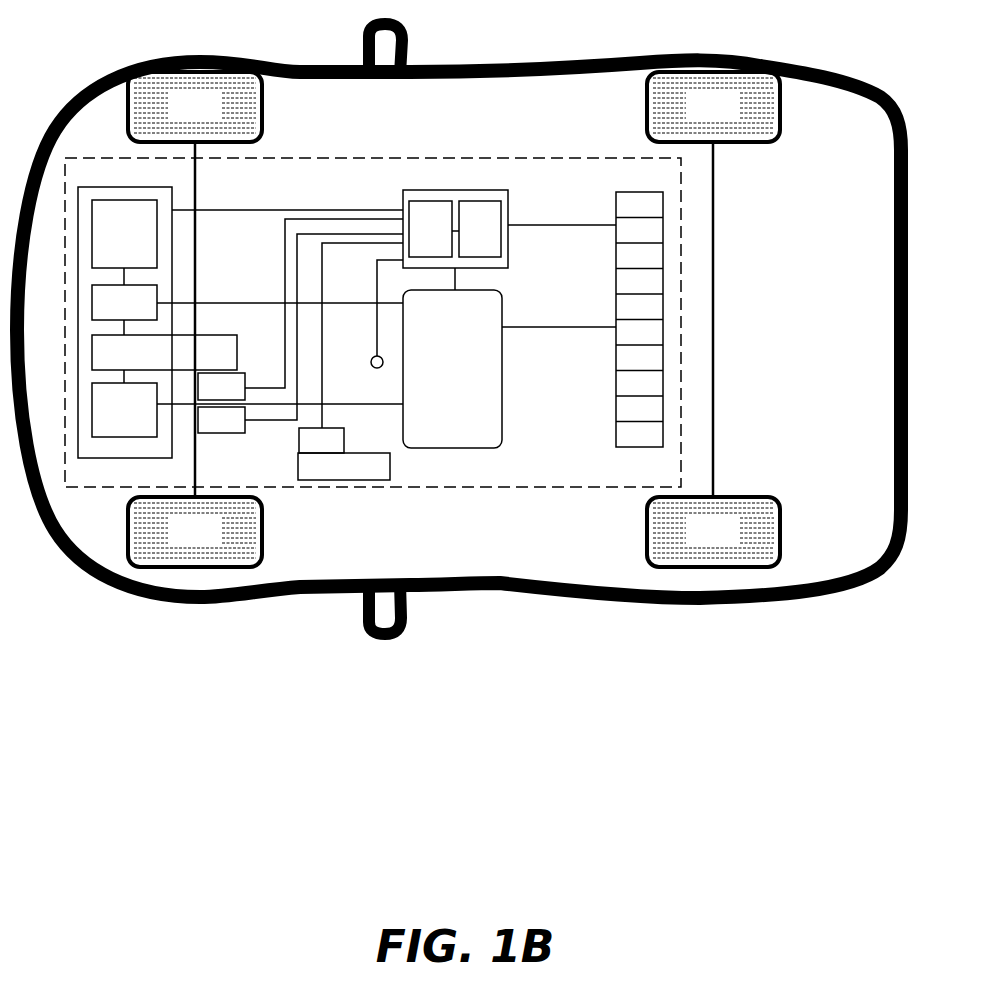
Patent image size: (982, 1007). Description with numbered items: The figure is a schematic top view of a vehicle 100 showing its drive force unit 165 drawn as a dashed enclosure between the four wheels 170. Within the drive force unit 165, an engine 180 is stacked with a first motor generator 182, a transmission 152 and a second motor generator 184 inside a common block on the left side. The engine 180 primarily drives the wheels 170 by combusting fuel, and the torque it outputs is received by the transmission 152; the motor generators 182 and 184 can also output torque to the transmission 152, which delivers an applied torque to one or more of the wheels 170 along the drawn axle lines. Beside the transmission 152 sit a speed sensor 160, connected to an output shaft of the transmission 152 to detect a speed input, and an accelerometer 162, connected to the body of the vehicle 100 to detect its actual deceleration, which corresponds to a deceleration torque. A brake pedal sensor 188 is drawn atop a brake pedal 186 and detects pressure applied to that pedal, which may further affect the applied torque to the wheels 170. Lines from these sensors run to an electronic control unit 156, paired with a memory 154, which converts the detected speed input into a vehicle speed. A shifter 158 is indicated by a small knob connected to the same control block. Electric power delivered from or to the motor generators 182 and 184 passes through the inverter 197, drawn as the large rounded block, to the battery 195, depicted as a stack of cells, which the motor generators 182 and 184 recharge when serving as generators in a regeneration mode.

The vehicle 100 is at (521, 64).
The drive force unit 165 is at (449, 158).
The wheels 170 is at (729, 543).
The engine 180 is at (108, 250).
The motor generator 182 is at (108, 314).
The transmission 152 is at (148, 364).
The motor generator 184 is at (108, 421).
The speed sensor 160 is at (205, 398).
The accelerometer 162 is at (205, 431).
The brake pedal sensor 188 is at (305, 452).
The brake pedal 186 is at (328, 478).
The electronic control unit 156 is at (414, 241).
The memory 154 is at (464, 241).
The inverter 197 is at (436, 379).
The battery 195 is at (618, 371).
The shifter 158 is at (370, 364).